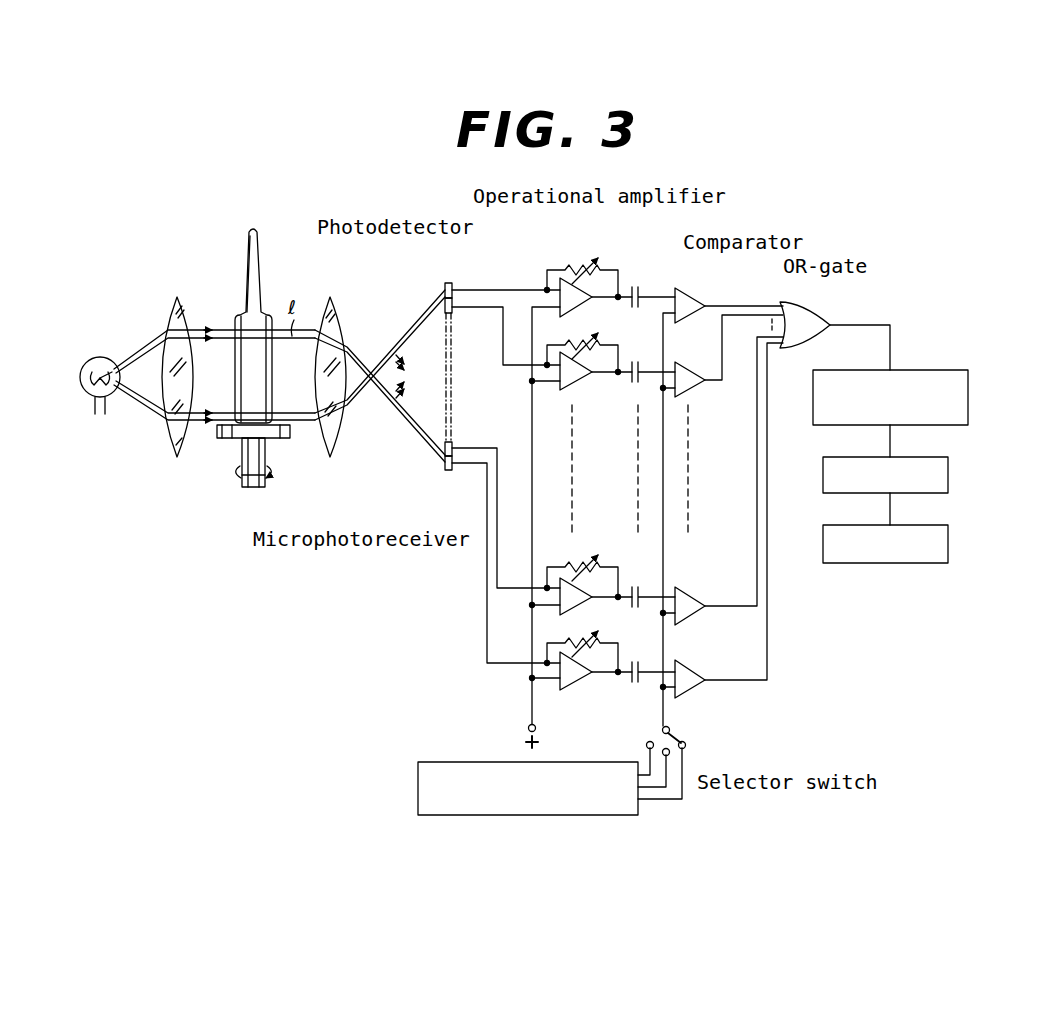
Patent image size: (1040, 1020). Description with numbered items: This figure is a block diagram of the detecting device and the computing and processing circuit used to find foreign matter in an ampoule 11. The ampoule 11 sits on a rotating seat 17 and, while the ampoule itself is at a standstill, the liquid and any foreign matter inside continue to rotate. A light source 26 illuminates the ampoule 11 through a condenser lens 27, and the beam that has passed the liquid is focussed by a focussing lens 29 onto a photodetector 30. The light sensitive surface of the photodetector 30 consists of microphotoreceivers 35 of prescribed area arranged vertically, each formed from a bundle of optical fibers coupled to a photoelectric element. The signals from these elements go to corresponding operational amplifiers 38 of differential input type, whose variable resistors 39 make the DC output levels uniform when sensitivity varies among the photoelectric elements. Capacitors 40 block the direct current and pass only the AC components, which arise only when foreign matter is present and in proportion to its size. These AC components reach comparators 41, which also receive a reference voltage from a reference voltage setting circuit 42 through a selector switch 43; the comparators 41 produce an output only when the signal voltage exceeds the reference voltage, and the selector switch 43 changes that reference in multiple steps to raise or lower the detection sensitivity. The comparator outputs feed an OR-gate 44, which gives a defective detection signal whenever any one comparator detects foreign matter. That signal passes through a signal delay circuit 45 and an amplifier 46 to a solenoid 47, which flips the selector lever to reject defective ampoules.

The ampoule 11 is at (246, 258).
The rotating seat 17 is at (288, 440).
The light source 26 is at (102, 357).
The condenser lens 27 is at (165, 318).
The focussing lens 29 is at (336, 310).
The photodetector 30 is at (436, 272).
The microphotoreceivers 35 is at (458, 286).
The operational amplifiers 38 is at (585, 293).
The variable resistors 39 is at (576, 268).
The capacitors 40 is at (636, 286).
The comparators 41 is at (698, 296).
The reference voltage setting circuit 42 is at (583, 816).
The selector switch 43 is at (685, 735).
The OR-gate 44 is at (802, 313).
The signal delay circuit 45 is at (924, 369).
The amplifier 46 is at (945, 458).
The solenoid 47 is at (946, 528).